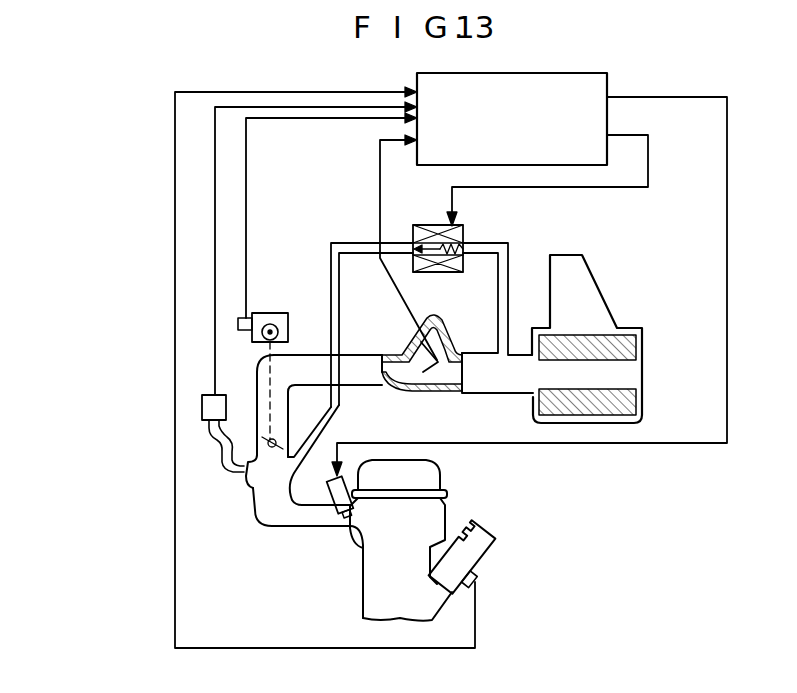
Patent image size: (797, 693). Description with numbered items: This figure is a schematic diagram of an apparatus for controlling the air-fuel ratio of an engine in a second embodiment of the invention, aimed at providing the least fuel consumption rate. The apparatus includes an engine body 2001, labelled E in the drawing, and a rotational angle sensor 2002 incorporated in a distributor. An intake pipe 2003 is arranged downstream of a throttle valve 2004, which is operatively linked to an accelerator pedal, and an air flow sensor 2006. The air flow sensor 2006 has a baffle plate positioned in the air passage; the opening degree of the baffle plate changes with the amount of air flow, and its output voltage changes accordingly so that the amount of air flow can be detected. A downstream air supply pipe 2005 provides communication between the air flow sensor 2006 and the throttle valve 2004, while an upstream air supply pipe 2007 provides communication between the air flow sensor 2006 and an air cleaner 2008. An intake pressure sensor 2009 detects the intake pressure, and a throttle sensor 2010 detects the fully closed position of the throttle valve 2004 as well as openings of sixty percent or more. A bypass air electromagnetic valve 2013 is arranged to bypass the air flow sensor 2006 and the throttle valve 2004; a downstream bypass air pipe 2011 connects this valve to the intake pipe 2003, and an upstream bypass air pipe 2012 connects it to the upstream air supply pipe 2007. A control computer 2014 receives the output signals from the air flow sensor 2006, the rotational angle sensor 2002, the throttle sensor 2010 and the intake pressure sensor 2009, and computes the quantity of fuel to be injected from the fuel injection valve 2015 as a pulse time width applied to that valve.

The engine body 2001 is at (428, 514).
The rotational angle sensor 2002 is at (473, 555).
The intake pipe 2003 is at (253, 488).
The throttle valve 2004 is at (246, 480).
The downstream air supply pipe 2005 is at (367, 363).
The air flow sensor 2006 is at (398, 393).
The upstream air supply pipe 2007 is at (522, 385).
The air cleaner 2008 is at (642, 395).
The intake pressure sensor 2009 is at (202, 406).
The throttle sensor 2010 is at (288, 314).
The downstream bypass air pipe 2011 is at (345, 213).
The upstream bypass air pipe 2012 is at (500, 247).
The bypass air electromagnetic valve 2013 is at (461, 222).
The control computer 2014 is at (607, 88).
The fuel injection valve 2015 is at (330, 498).
The engine E is at (460, 540).